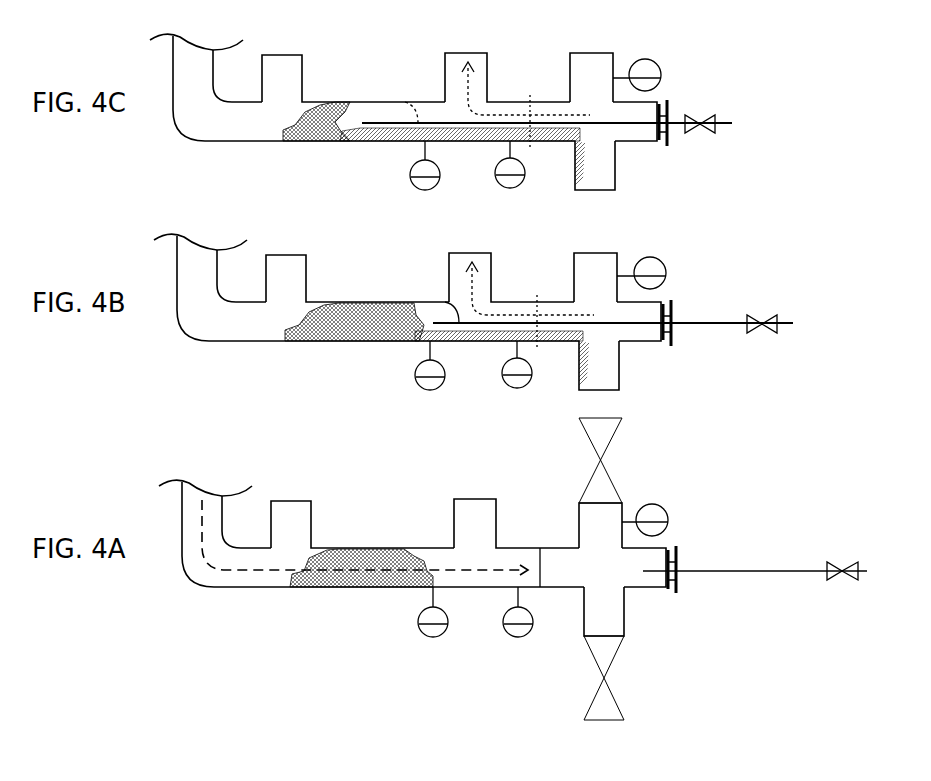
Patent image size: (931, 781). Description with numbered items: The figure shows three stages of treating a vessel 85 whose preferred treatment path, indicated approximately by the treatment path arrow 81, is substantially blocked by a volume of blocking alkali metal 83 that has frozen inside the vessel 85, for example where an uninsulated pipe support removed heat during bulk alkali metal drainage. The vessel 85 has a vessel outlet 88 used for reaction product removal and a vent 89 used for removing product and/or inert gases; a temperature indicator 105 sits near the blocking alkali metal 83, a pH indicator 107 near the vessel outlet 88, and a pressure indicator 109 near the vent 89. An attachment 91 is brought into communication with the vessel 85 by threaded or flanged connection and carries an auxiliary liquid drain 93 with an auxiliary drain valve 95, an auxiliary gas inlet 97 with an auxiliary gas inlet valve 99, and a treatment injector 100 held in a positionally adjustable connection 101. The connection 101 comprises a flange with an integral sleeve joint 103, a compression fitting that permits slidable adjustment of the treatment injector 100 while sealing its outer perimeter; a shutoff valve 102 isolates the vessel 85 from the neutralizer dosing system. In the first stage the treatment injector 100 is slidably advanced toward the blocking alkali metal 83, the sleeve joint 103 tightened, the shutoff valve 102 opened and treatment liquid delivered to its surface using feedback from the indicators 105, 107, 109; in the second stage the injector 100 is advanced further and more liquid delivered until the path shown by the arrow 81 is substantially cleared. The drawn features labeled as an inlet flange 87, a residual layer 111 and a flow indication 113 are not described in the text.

In FIG. 4A, the treatment path arrow 81 is at (365, 566).
In FIG. 4C, the blocking alkali metal 83 is at (315, 132).
In FIG. 4B, the blocking alkali metal 83 is at (354, 341).
In FIG. 4A, the blocking alkali metal 83 is at (361, 587).
In FIG. 4C, the vessel 85 is at (178, 124).
In FIG. 4B, the vessel 85 is at (203, 291).
In FIG. 4A, the vessel 85 is at (206, 537).
In FIG. 4A, the inlet flange 87 is at (362, 524).
In FIG. 4C, the vessel outlet 88 is at (520, 143).
In FIG. 4B, the vessel outlet 88 is at (394, 353).
In FIG. 4A, the vessel outlet 88 is at (399, 600).
In FIG. 4C, the vent 89 is at (488, 62).
In FIG. 4B, the vent 89 is at (511, 276).
In FIG. 4A, the vent 89 is at (516, 516).
In FIG. 4C, the attachment 91 is at (575, 183).
In FIG. 4B, the attachment 91 is at (581, 365).
In FIG. 4A, the attachment 91 is at (584, 612).
In FIG. 4C, the auxiliary liquid drain 93 is at (615, 178).
In FIG. 4B, the auxiliary liquid drain 93 is at (641, 340).
In FIG. 4A, the auxiliary liquid drain 93 is at (645, 586).
In FIG. 4A, the auxiliary drain valve 95 is at (630, 678).
In FIG. 4C, the auxiliary gas inlet 97 is at (570, 96).
In FIG. 4B, the auxiliary gas inlet 97 is at (570, 277).
In FIG. 4A, the auxiliary gas inlet 97 is at (575, 525).
In FIG. 4A, the auxiliary gas inlet valve 99 is at (576, 460).
In FIG. 4C, the treatment injector 100 is at (397, 122).
In FIG. 4B, the treatment injector 100 is at (595, 301).
In FIG. 4A, the treatment injector 100 is at (755, 552).
In FIG. 4C, the positionally adjustable connection 101 is at (667, 102).
In FIG. 4B, the positionally adjustable connection 101 is at (691, 299).
In FIG. 4A, the positionally adjustable connection 101 is at (704, 553).
In FIG. 4C, the shutoff valve 102 is at (712, 115).
In FIG. 4B, the shutoff valve 102 is at (778, 310).
In FIG. 4A, the shutoff valve 102 is at (858, 552).
In FIG. 4C, the sleeve joint 103 is at (667, 146).
In FIG. 4B, the sleeve joint 103 is at (699, 339).
In FIG. 4A, the sleeve joint 103 is at (704, 585).
In FIG. 4C, the temperature indicator 105 is at (440, 180).
In FIG. 4B, the temperature indicator 105 is at (447, 388).
In FIG. 4A, the temperature indicator 105 is at (450, 635).
In FIG. 4C, the pH indicator 107 is at (510, 190).
In FIG. 4B, the pH indicator 107 is at (528, 385).
In FIG. 4A, the pH indicator 107 is at (530, 632).
In FIG. 4C, the pressure indicator 109 is at (647, 59).
In FIG. 4B, the pressure indicator 109 is at (659, 252).
In FIG. 4A, the pressure indicator 109 is at (663, 499).
In FIG. 4C, the residual deposit layer 111 is at (400, 145).
In FIG. 4B, the residual deposit layer 111 is at (499, 367).
In FIG. 4C, the displaced fluid flow 113 is at (466, 66).
In FIG. 4B, the displaced fluid flow 113 is at (503, 280).